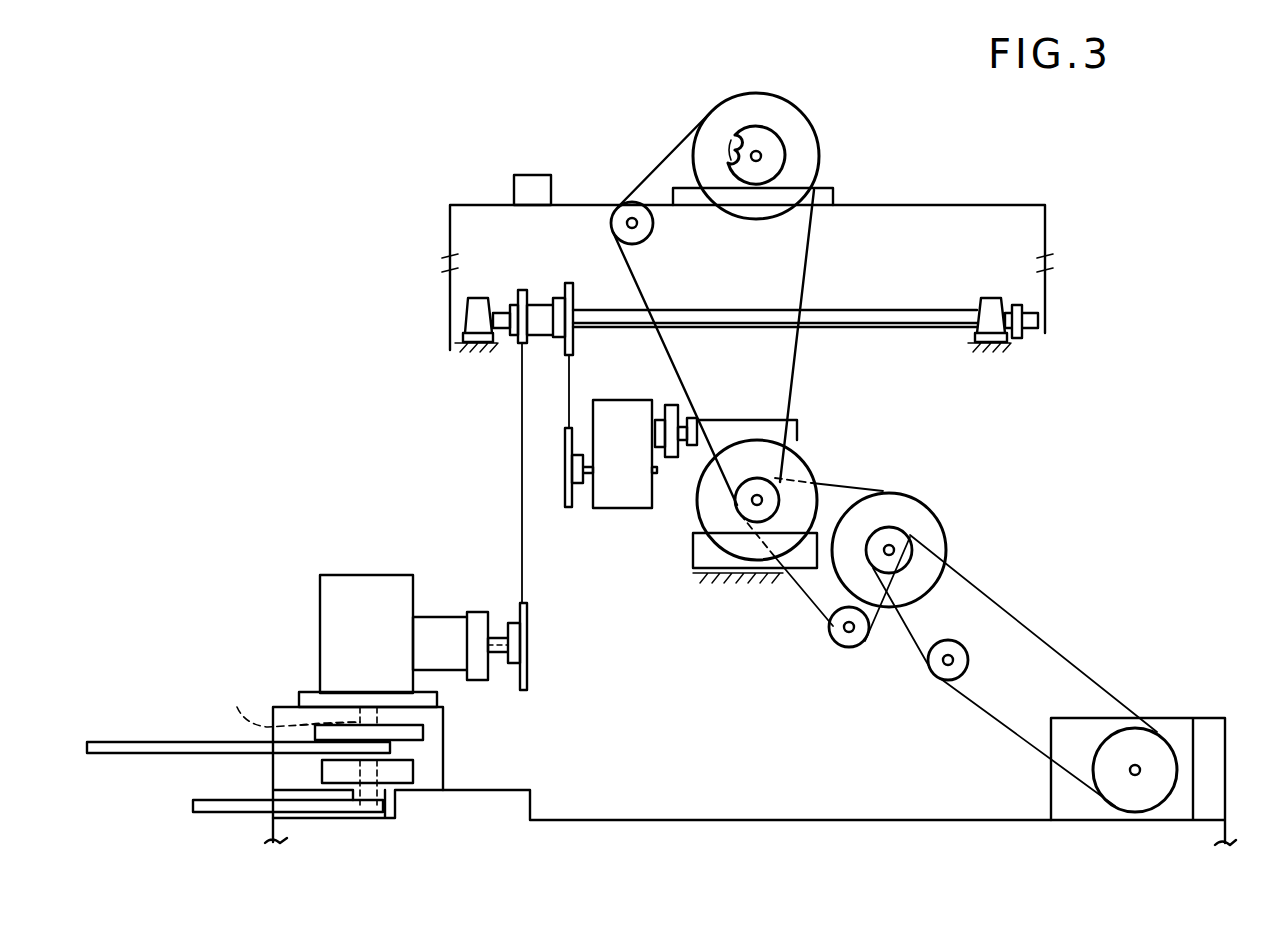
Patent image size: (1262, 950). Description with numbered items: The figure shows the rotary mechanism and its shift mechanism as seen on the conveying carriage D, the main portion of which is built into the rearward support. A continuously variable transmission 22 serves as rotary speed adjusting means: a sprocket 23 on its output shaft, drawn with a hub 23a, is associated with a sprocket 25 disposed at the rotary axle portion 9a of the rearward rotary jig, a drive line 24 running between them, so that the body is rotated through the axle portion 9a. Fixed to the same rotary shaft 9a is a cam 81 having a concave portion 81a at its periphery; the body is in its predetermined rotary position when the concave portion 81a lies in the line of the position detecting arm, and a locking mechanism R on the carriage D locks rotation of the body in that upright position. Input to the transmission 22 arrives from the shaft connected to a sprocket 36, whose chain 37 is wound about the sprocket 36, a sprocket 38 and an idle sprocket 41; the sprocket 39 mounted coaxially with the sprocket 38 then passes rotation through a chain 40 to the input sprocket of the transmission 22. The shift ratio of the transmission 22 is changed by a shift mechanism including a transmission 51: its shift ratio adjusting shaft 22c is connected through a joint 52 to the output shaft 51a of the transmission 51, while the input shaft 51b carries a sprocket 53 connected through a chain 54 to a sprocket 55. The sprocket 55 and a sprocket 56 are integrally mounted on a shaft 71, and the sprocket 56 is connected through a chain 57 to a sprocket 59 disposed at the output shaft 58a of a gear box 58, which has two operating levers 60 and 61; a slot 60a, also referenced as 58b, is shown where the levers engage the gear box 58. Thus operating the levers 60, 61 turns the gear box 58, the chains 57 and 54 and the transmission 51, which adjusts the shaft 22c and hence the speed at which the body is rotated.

The cam 81 is at (752, 136).
The concave portion 81a is at (727, 150).
The sprocket 25 is at (812, 124).
The rotary axle portion 9a is at (762, 158).
The locking mechanism R is at (530, 175).
The sprocket 56 is at (522, 288).
The sprocket 55 is at (569, 282).
The shaft 71 is at (862, 308).
The chain 57 is at (520, 405).
The chain 54 is at (566, 405).
The output shaft 51a is at (655, 432).
The joint 52 is at (674, 406).
The belt 24 is at (806, 363).
The sprocket 53 is at (564, 495).
The input shaft 51b is at (590, 475).
The transmission 51 is at (613, 504).
The shift ratio adjusting shaft 22c is at (690, 443).
The continuously variable transmission 22 is at (680, 561).
The sprocket 23 is at (818, 482).
The pulley hub 23a is at (752, 506).
The sprocket 38 is at (888, 535).
The sprocket 39 is at (946, 547).
The chain 40 is at (818, 612).
The idle sprocket 41 is at (968, 662).
The chain 37 is at (1086, 677).
The sprocket 36 is at (1132, 803).
The gear box 58 is at (372, 570).
The sprocket 59 is at (529, 674).
The output shaft 58a is at (498, 655).
The slit 60a is at (271, 684).
The shaft 58b is at (330, 723).
The operating lever 60 is at (147, 755).
The operating lever 61 is at (237, 813).
The conveying carriage D is at (790, 880).